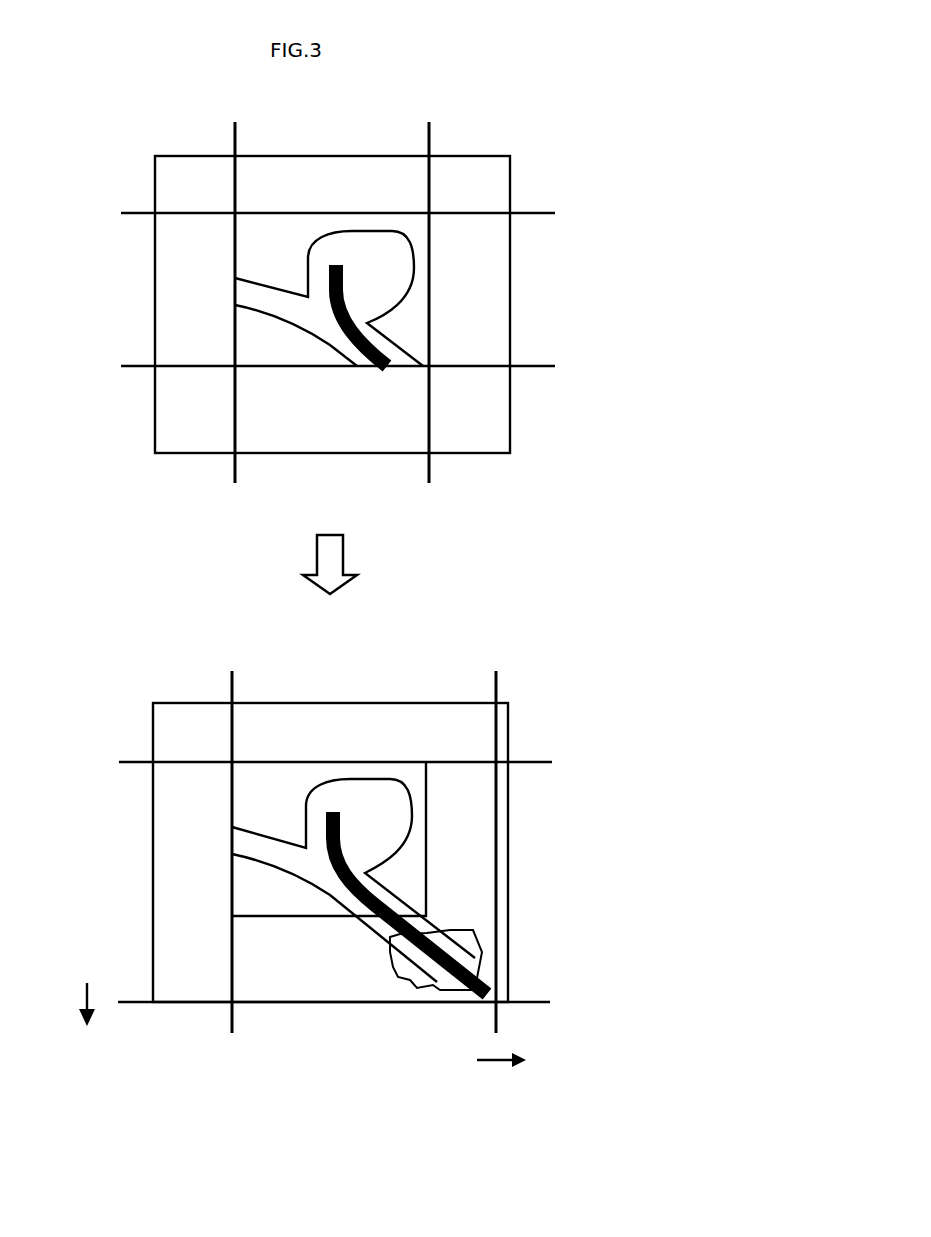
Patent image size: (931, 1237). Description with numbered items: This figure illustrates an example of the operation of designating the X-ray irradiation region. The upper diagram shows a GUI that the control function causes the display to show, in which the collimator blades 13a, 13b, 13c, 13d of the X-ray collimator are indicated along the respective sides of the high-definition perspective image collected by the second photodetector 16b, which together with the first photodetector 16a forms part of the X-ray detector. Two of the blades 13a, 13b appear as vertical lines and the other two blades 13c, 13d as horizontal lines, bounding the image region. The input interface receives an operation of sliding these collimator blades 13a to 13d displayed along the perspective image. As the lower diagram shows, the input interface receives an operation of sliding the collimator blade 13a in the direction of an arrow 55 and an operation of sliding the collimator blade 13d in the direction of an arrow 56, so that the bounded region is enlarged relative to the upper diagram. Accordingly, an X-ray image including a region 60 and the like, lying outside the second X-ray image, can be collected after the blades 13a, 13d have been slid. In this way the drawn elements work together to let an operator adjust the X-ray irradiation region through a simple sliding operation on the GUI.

The collimator blade 13a is at (430, 130).
The collimator blade 13b is at (236, 130).
The collimator blade 13c is at (537, 214).
The collimator blade 13d is at (538, 364).
The first photodetector 16a is at (510, 176).
The second photodetector 16b is at (392, 213).
The arrow 55 is at (500, 1066).
The arrow 56 is at (84, 1002).
The region 60 is at (420, 990).